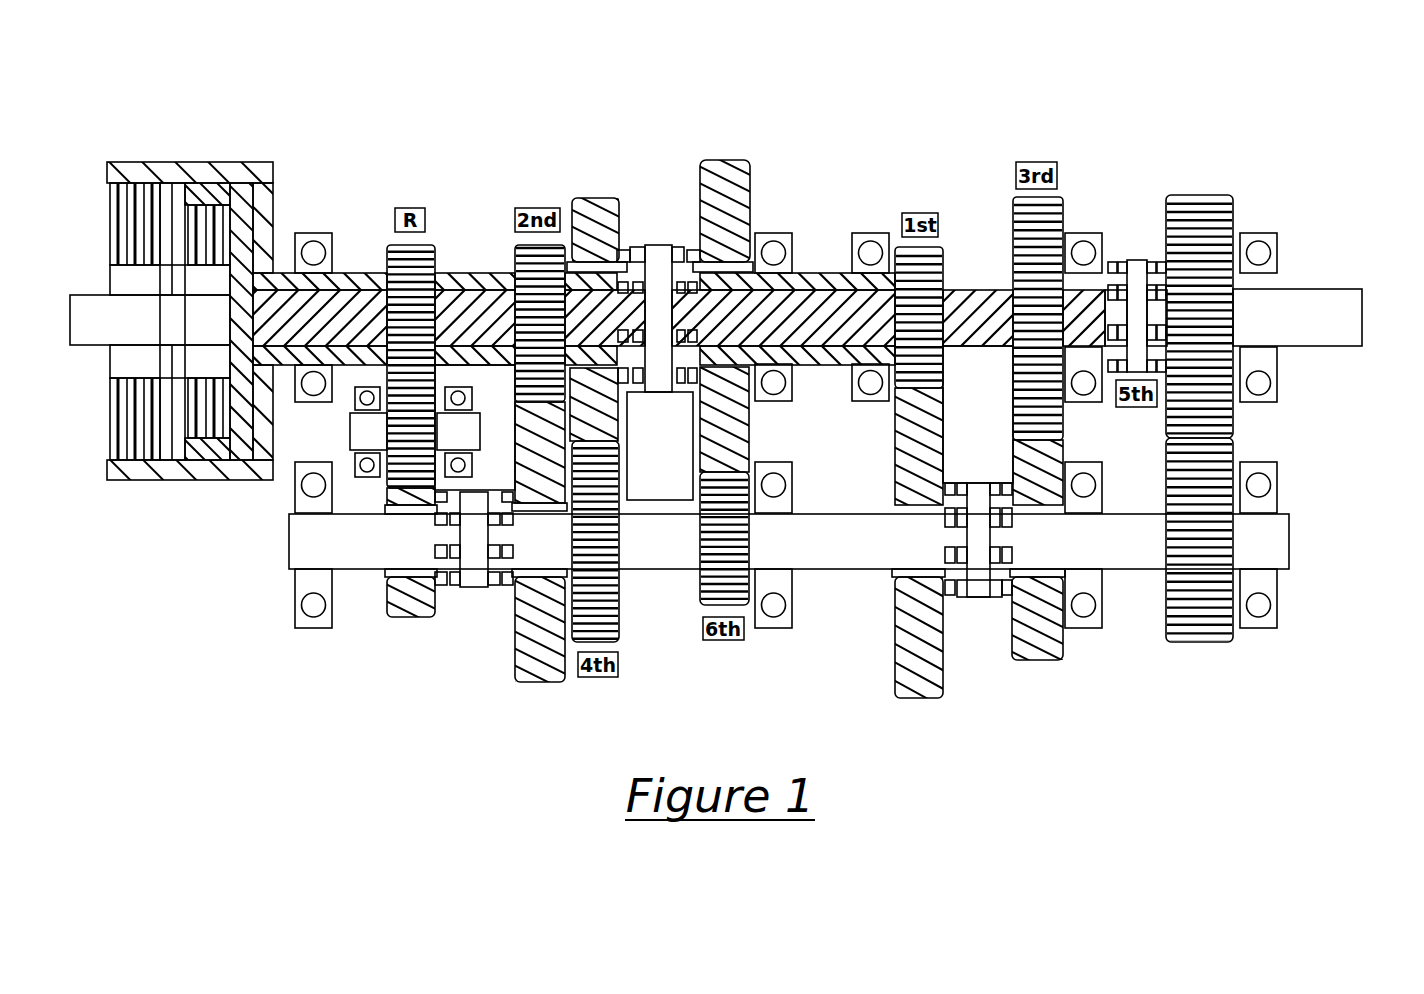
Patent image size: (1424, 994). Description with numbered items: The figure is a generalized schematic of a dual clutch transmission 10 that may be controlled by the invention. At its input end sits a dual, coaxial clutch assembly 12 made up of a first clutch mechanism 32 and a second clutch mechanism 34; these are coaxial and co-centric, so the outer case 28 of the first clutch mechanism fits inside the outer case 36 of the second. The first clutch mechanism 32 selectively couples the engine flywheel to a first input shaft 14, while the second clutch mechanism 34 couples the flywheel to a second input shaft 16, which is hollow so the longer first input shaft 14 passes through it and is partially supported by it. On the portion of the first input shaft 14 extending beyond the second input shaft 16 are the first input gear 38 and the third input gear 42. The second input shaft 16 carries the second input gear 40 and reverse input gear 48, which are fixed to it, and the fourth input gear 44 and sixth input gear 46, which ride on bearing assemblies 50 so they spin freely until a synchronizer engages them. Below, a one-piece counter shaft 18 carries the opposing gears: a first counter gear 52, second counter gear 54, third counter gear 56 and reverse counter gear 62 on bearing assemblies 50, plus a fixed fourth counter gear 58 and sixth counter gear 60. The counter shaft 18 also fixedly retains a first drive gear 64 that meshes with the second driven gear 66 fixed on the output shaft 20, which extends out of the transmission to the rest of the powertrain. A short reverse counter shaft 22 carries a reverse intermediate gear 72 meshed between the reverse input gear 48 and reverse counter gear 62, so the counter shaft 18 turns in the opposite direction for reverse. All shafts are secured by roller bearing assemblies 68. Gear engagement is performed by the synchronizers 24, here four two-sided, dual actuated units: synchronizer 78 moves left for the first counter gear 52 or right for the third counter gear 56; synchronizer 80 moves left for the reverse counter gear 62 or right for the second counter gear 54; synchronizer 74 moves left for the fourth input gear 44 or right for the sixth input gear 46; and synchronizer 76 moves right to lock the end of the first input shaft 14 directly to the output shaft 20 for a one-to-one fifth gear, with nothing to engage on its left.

The dual clutch transmission 10 is at (505, 138).
The dual, coaxial clutch assembly 12 is at (218, 130).
The first input shaft 14 is at (985, 298).
The second input shaft 16 is at (338, 290).
The counter shaft 18 is at (298, 545).
The output shaft 20 is at (1352, 293).
The reverse counter shaft 22 is at (296, 455).
The synchronizers 24 is at (681, 195).
The outer case of the first clutch mechanism 28 is at (243, 227).
The first clutch mechanism 32 is at (218, 218).
The second clutch mechanism 34 is at (140, 193).
The outer case of the second clutch mechanism 36 is at (273, 192).
The first input gear 38 is at (948, 255).
The second input gear 40 is at (513, 250).
The third input gear 42 is at (1050, 210).
The fourth input gear 44 is at (605, 203).
The sixth input gear 46 is at (748, 178).
The reverse input gear 48 is at (440, 252).
The bearing assemblies 50 is at (614, 370).
The first counter gear 52 is at (895, 625).
The second counter gear 54 is at (552, 668).
The third counter gear 56 is at (1030, 658).
The fourth counter gear 58 is at (607, 622).
The sixth counter gear 60 is at (697, 592).
The reverse counter gear 62 is at (392, 607).
The first drive gear 64 is at (1175, 612).
The second driven gear 66 is at (1205, 205).
The bearing assembly 68 is at (796, 252).
The reverse intermediate gear 72 is at (367, 430).
The synchronizer 74 is at (652, 250).
The synchronizer 76 is at (1138, 275).
The synchronizer 78 is at (975, 585).
The synchronizer 80 is at (474, 583).